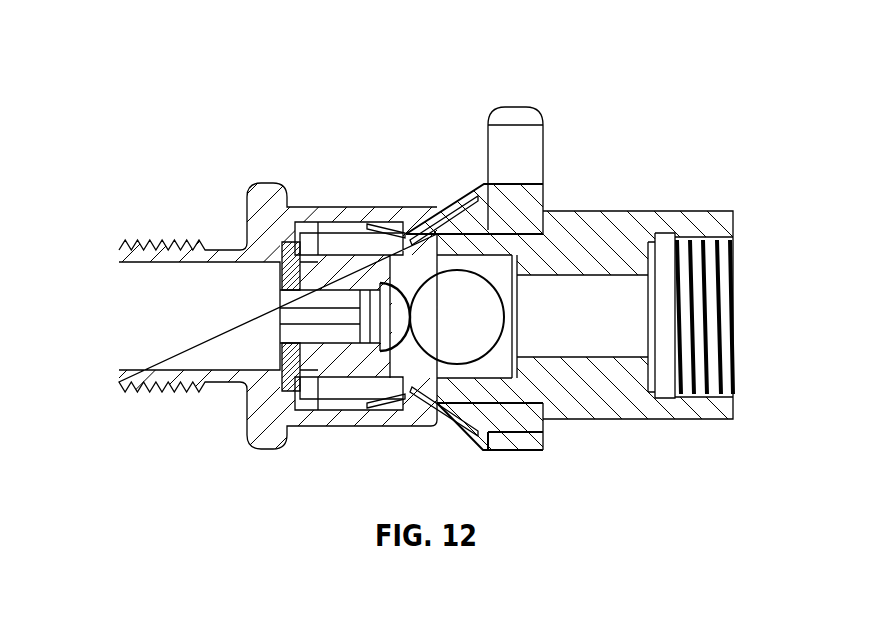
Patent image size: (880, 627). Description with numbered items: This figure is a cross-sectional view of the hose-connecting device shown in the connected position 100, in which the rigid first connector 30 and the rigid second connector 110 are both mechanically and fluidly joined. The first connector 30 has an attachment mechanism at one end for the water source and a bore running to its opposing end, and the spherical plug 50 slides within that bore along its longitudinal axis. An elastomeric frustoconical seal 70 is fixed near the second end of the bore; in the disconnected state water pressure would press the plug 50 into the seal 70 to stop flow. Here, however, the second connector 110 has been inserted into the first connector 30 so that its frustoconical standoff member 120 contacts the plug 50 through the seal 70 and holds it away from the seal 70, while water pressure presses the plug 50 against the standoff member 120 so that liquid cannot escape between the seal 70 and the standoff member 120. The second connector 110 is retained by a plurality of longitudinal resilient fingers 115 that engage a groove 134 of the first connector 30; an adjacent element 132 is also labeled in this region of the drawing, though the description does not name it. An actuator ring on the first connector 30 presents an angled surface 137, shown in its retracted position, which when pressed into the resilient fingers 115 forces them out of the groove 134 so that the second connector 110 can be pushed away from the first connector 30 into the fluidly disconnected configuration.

The connected position 100 is at (183, 54).
The second connector 110 is at (257, 185).
The resilient fingers 115 is at (335, 217).
The sealing lip 132 is at (403, 232).
The groove 134 is at (419, 237).
The angled surface 137 is at (467, 207).
The first connector 30 is at (675, 215).
The frustoconical seal 70 is at (387, 281).
The spherical plug 50 is at (492, 363).
The standoff member 120 is at (337, 330).